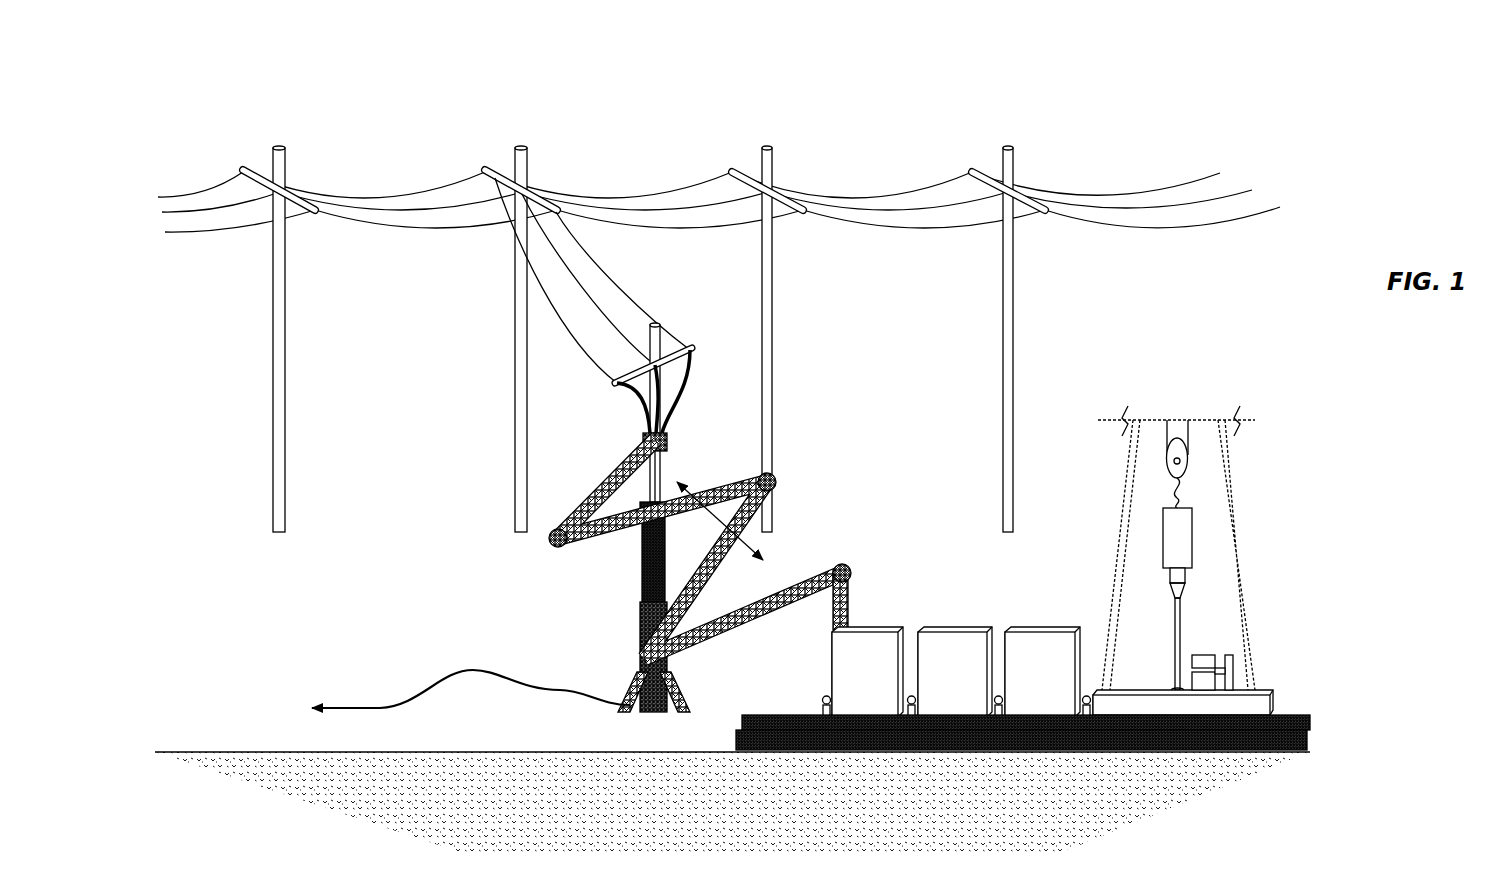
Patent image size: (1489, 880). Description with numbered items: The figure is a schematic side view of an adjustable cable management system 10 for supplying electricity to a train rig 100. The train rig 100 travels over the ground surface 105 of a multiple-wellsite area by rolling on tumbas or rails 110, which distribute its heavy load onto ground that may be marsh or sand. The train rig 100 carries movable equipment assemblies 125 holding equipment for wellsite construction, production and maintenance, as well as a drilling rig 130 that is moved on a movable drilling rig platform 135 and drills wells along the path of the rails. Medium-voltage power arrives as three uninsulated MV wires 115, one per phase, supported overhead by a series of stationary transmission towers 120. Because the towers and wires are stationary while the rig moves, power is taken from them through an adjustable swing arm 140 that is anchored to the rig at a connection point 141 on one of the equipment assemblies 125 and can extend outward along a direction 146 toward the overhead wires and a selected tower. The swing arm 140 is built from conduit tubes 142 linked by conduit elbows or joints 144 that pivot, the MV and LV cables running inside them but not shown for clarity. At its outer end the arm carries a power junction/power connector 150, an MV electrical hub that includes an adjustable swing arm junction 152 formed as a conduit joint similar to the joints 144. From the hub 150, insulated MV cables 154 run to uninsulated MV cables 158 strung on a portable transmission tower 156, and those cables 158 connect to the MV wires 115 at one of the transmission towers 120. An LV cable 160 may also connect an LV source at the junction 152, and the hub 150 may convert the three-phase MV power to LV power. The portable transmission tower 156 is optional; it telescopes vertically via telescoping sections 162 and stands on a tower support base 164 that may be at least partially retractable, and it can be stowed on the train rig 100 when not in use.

The adjustable cable management system 10 is at (198, 136).
The train rig 100 is at (1100, 527).
The ground surface 105 is at (188, 748).
The tumbas or rails 110 is at (1308, 738).
The uninsulated MV wires 115 is at (597, 185).
The transmission towers 120 is at (273, 382).
The movable equipment assemblies 125 is at (1033, 628).
The drilling rig 130 is at (1247, 525).
The movable drilling rig platform 135 is at (1277, 690).
The adjustable swing arm 140 is at (806, 566).
The connection point 141 is at (858, 618).
The conduit tubes 142 is at (745, 625).
The conduit elbows or joints 144 is at (772, 481).
The direction 146 is at (715, 517).
The power junction/power connector 150 is at (603, 380).
The adjustable swing arm junction 152 is at (668, 440).
The insulated MV cables 154 is at (692, 378).
The portable transmission tower 156 is at (652, 307).
The uninsulated MV cables 158 is at (500, 243).
The LV cable 160 is at (652, 477).
The telescoping sections 162 is at (655, 323).
The tower support base 164 is at (632, 690).